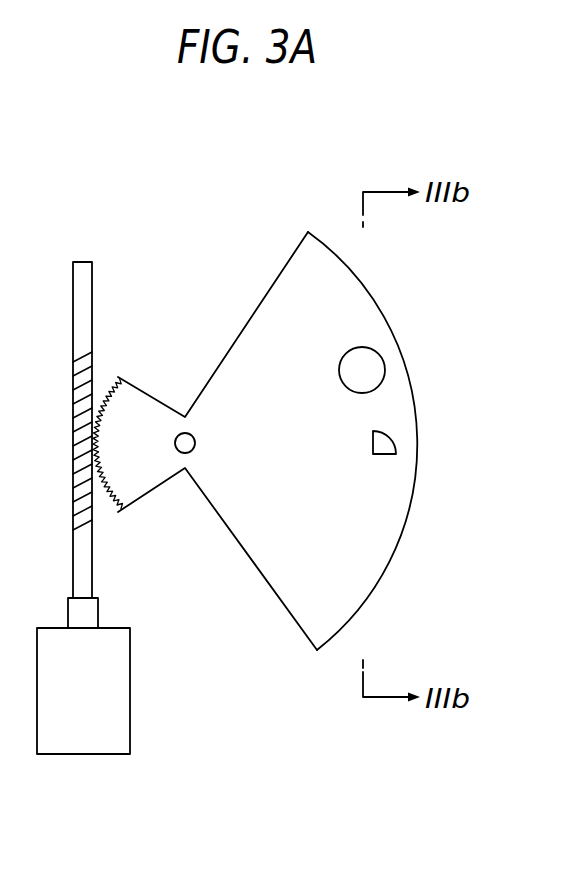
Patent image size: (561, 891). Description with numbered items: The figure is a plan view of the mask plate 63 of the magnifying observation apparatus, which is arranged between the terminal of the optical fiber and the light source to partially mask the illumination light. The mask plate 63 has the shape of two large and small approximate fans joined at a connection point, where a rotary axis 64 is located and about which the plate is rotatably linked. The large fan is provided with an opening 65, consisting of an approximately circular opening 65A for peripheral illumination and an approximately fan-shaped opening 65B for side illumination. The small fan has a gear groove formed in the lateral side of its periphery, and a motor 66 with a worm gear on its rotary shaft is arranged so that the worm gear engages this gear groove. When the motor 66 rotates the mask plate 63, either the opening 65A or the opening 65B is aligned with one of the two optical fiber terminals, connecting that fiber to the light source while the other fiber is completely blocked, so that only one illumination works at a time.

The mask plate 63 is at (232, 347).
The rotary axis 64 is at (185, 453).
The opening 65 is at (394, 409).
The opening for peripheral illumination 65A is at (388, 339).
The opening for side illumination 65B is at (389, 454).
The motor 66 is at (130, 687).